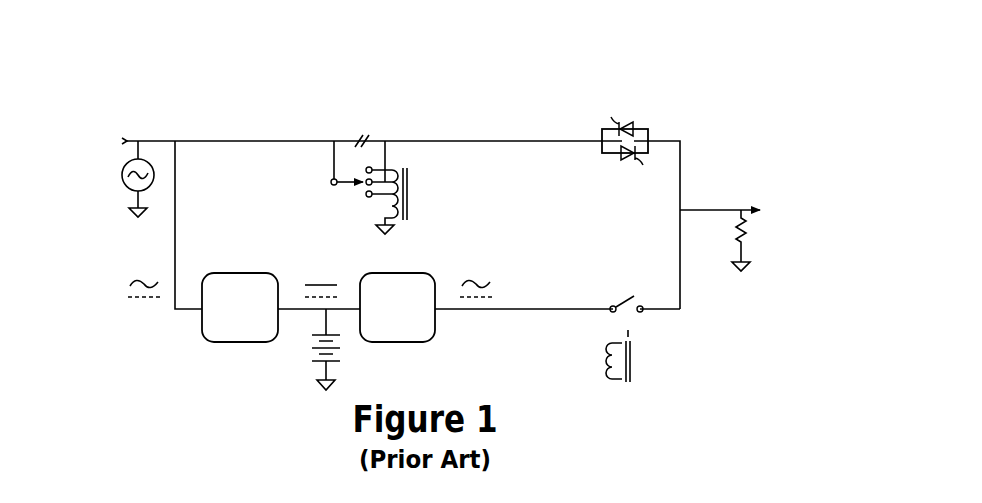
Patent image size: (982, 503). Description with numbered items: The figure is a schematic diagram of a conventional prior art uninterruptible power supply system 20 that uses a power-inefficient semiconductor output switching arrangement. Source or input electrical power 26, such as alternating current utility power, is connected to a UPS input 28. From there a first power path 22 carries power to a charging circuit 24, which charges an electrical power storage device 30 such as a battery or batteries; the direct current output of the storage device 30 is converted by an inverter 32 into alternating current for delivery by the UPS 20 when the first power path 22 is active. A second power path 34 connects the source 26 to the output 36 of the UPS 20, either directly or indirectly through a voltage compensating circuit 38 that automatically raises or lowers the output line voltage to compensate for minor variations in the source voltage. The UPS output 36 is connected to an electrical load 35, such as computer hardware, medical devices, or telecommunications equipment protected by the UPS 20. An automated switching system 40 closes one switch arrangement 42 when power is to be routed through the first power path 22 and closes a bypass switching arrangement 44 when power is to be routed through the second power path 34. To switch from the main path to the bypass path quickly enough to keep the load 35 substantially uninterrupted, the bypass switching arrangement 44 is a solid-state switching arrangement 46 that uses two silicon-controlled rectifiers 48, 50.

The conventional UPS system 20 is at (158, 330).
The first power path 22 is at (180, 215).
The charging circuit 24 is at (240, 307).
The source electrical power 26 is at (120, 188).
The UPS input 28 is at (125, 131).
The electrical power storage device 30 is at (307, 349).
The inverter 32 is at (427, 307).
The second power path 34 is at (250, 140).
The electrical load 35 is at (757, 234).
The UPS output 36 is at (742, 192).
The voltage compensating circuit 38 is at (416, 195).
The automated switching system 40 is at (660, 365).
The switch arrangement 42 is at (633, 388).
The bypass switching arrangement 44 is at (598, 122).
The solid-state switching arrangement 46 is at (595, 158).
The silicon-controlled rectifier 48 is at (634, 126).
The silicon-controlled rectifier 50 is at (614, 160).